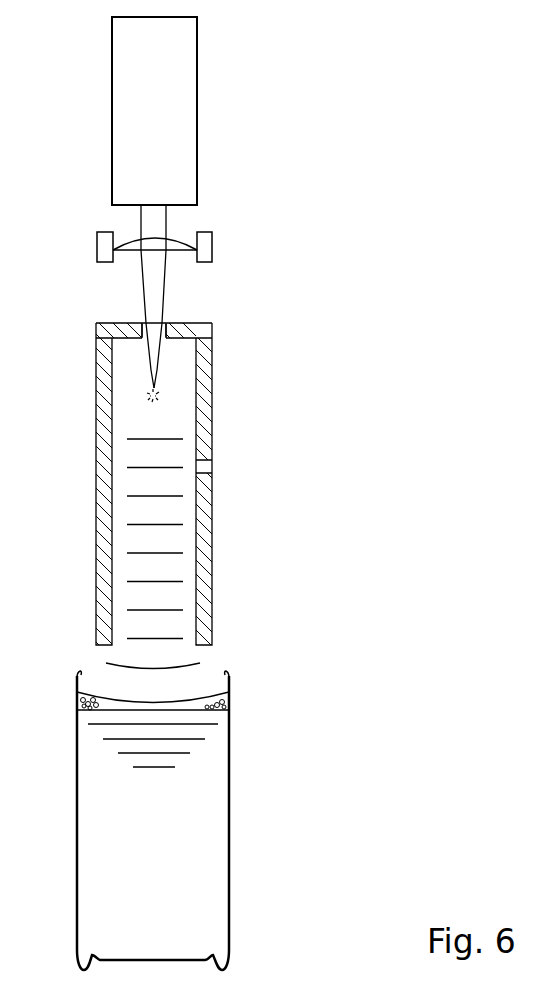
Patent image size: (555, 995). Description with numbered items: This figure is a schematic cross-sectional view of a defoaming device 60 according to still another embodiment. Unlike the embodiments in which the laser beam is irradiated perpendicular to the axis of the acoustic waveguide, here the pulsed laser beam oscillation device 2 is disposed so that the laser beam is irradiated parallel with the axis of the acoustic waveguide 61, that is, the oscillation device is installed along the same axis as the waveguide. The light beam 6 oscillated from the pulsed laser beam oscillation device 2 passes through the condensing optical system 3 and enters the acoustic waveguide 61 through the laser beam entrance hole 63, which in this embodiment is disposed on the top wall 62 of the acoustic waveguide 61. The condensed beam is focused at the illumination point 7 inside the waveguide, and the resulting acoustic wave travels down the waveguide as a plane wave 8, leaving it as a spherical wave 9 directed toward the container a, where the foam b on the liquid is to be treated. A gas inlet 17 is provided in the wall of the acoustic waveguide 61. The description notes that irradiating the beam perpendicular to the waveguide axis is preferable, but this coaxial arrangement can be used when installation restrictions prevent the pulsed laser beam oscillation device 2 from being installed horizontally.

The defoaming device 60 is at (262, 156).
The pulsed laser beam oscillation device 2 is at (112, 83).
The condensing optical system 3 is at (212, 248).
The light beam 6 is at (141, 273).
The illumination point 7 is at (162, 391).
The plane wave 8 is at (162, 582).
The spherical wave 9 is at (122, 665).
The gas inlet 17 is at (212, 467).
The acoustic waveguide 61 is at (96, 470).
The top wall 62 is at (117, 323).
The laser beam entrance hole 63 is at (163, 325).
The container a is at (231, 832).
The foam b is at (76, 692).